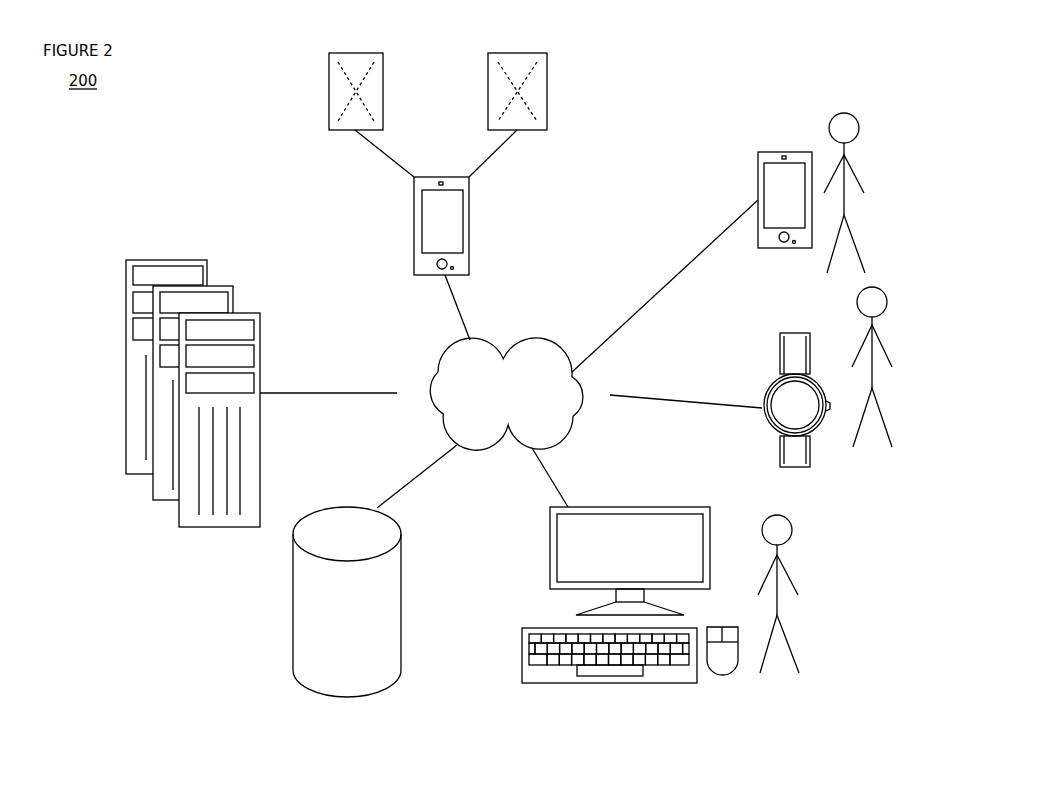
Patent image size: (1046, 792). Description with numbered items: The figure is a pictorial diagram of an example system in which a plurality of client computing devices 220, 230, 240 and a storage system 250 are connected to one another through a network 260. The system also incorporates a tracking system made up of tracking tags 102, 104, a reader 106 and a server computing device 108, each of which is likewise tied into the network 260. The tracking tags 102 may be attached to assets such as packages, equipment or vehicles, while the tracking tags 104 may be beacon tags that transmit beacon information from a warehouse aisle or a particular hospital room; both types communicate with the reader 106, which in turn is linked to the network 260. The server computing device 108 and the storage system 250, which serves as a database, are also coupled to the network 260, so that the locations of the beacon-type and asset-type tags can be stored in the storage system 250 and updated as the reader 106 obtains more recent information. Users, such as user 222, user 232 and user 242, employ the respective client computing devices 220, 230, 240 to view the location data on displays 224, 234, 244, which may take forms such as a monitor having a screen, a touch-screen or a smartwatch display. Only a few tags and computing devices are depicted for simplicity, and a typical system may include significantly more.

The tracking tags 102 is at (329, 85).
The tracking tags 104 is at (547, 105).
The reader 106 is at (469, 240).
The server computing device 108 is at (260, 348).
The client computing device 220 is at (748, 207).
The user 222 is at (848, 203).
The display 224 is at (760, 160).
The client computing device 230 is at (765, 423).
The user 232 is at (877, 378).
The display 234 is at (829, 413).
The client computing device 240 is at (651, 568).
The user 242 is at (780, 603).
The display 244 is at (703, 527).
The storage system 250 is at (402, 610).
The network 260 is at (405, 415).